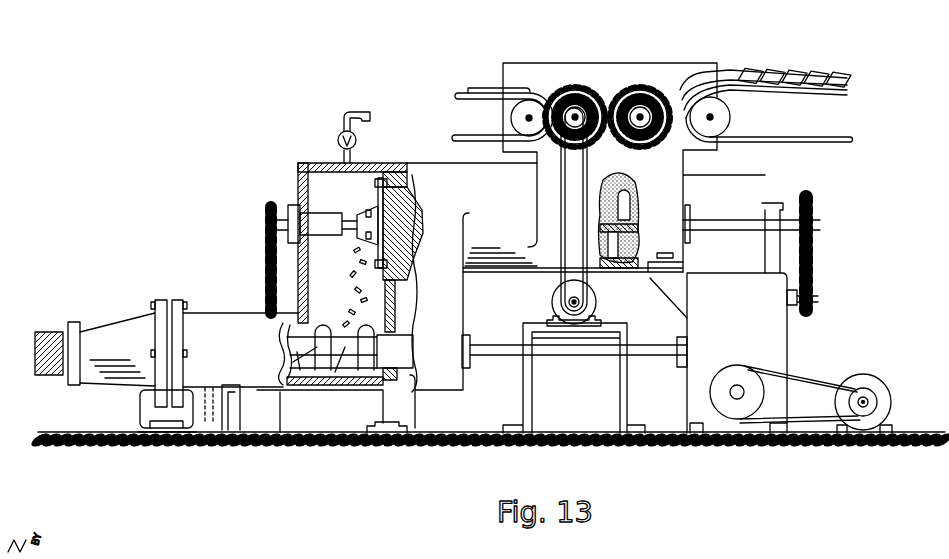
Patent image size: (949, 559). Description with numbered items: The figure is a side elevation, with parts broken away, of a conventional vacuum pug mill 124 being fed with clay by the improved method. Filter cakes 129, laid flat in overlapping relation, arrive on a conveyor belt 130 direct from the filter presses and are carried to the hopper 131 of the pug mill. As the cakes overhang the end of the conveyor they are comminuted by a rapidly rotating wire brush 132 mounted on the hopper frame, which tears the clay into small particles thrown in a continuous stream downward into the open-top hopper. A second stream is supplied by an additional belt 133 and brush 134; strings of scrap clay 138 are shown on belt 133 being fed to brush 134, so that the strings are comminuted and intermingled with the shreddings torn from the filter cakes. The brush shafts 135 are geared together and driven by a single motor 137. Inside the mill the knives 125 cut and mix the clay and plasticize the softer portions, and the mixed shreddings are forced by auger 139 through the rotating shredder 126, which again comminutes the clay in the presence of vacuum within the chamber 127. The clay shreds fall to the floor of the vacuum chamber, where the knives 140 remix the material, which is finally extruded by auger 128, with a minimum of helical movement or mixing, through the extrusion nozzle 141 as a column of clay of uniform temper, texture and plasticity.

The vacuum pug mill 124 is at (438, 163).
The knives 125 is at (613, 247).
The shredder 126 is at (360, 213).
The chamber 127 is at (363, 289).
The auger 128 is at (270, 335).
The filter cakes 129 is at (790, 74).
The conveyor belt 130 is at (812, 97).
The hopper 131 is at (663, 162).
The wire brush 132 is at (662, 105).
The belt 133 is at (490, 101).
The brush 134 is at (572, 98).
The brush shafts 135 is at (642, 106).
The motor 137 is at (597, 299).
The strings of scrap clay 138 is at (490, 88).
The auger 139 is at (420, 228).
The knives 140 is at (349, 372).
The extrusion nozzle 141 is at (113, 330).